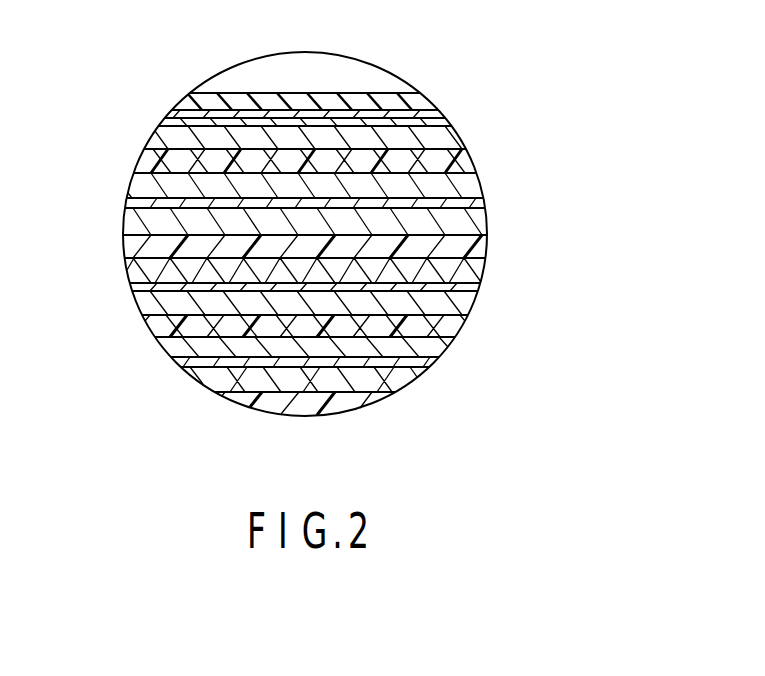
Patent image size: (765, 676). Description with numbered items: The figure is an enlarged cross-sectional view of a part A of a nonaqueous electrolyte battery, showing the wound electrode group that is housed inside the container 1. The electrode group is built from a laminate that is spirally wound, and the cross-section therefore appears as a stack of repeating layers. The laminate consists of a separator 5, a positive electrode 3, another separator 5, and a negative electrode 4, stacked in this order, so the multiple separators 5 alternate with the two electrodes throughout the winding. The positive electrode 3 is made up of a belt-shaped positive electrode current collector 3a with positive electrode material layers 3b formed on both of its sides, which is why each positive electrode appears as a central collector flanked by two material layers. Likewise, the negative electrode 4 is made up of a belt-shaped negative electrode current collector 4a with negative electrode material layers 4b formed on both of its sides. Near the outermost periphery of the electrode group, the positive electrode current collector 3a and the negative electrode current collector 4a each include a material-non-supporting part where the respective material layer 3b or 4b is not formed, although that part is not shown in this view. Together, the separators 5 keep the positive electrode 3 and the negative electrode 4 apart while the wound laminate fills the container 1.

The container 1 is at (422, 96).
The part A is at (222, 86).
The positive electrode 3 is at (560, 148).
The positive electrode current collector 3a is at (478, 204).
The positive electrode material layer 3b is at (478, 174).
The negative electrode 4 is at (528, 70).
The negative electrode current collector 4a is at (448, 114).
The negative electrode material layer 4b is at (450, 146).
The separator 5 is at (148, 156).